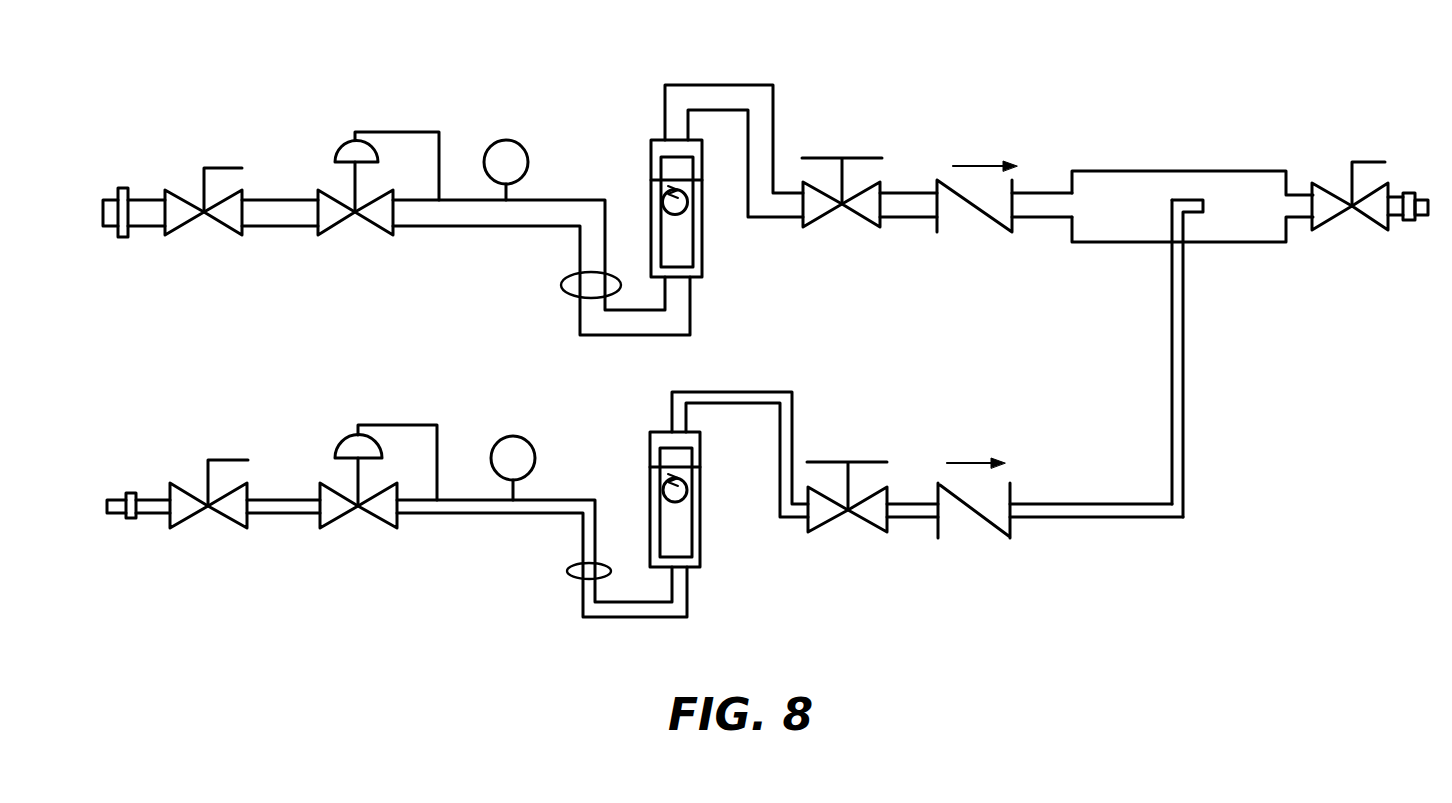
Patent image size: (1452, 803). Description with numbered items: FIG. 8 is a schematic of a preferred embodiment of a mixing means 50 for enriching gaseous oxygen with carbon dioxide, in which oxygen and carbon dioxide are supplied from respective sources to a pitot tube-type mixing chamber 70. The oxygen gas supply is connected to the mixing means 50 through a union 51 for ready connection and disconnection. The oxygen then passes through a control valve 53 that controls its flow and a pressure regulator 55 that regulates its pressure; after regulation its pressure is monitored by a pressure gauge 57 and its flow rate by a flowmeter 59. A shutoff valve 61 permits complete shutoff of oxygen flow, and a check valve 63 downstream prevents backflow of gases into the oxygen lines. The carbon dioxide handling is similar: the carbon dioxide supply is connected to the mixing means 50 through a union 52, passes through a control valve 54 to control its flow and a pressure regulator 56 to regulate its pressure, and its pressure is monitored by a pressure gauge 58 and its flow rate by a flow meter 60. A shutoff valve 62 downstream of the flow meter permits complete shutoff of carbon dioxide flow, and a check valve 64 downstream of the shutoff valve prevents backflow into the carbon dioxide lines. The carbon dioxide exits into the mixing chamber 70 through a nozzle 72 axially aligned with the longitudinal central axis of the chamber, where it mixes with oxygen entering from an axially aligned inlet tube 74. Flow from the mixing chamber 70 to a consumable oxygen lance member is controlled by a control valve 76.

The mixing means 50 is at (898, 80).
The union 51 is at (128, 188).
The union 52 is at (131, 519).
The control valve 53 is at (236, 190).
The control valve 54 is at (237, 529).
The pressure regulator 55 is at (346, 140).
The pressure regulator 56 is at (380, 529).
The pressure gauge 57 is at (515, 144).
The pressure gauge 58 is at (535, 449).
The flowmeter 59 is at (655, 203).
The flow meter 60 is at (700, 540).
The shutoff valve 61 is at (860, 218).
The shutoff valve 62 is at (872, 531).
The check valve 63 is at (973, 212).
The check valve 64 is at (985, 522).
The pitot tube-type mixing chamber 70 is at (1133, 171).
The nozzle 72 is at (1193, 200).
The inlet tube 74 is at (1050, 192).
The control valve 76 is at (1368, 213).